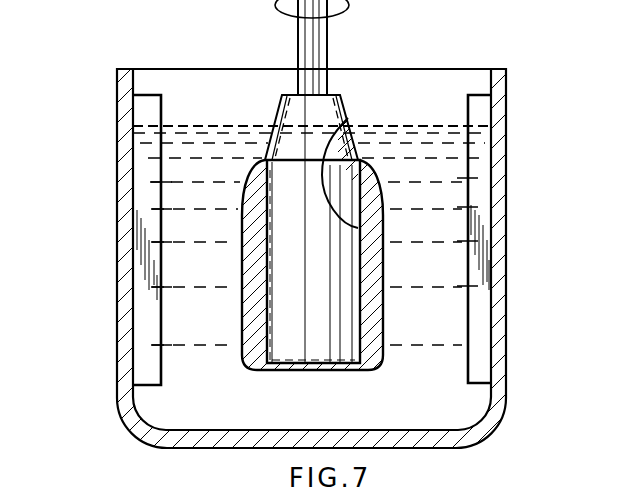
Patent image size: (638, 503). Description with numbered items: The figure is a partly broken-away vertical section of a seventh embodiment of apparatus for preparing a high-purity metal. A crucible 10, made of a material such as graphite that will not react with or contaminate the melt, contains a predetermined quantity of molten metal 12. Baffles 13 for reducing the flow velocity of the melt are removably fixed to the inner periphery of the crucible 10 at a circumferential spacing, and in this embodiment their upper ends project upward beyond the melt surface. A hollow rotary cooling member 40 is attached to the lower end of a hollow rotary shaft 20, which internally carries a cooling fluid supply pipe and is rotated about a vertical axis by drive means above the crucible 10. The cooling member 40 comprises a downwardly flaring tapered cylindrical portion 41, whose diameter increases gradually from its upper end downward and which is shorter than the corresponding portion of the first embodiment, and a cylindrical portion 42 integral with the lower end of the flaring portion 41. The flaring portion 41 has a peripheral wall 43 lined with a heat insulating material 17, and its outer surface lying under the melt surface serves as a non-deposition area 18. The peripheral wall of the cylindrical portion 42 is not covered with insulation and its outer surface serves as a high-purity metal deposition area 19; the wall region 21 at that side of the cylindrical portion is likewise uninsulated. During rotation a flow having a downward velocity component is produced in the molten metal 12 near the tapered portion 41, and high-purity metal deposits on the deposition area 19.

The crucible 10 is at (498, 292).
The molten metal 12 is at (441, 402).
The baffles 13 is at (145, 333).
The heat insulating material 17 is at (330, 145).
The non-deposition area 18 is at (272, 140).
The high-purity metal deposition area 19 is at (265, 256).
The hollow rotary shaft 20 is at (316, 42).
The bottle wall 21 is at (372, 314).
The hollow rotary cooling member 40 is at (337, 373).
The downwardly flaring tapered cylindrical portion 41 is at (292, 116).
The cylindrical portion 42 is at (287, 328).
The peripheral wall 43 is at (360, 146).